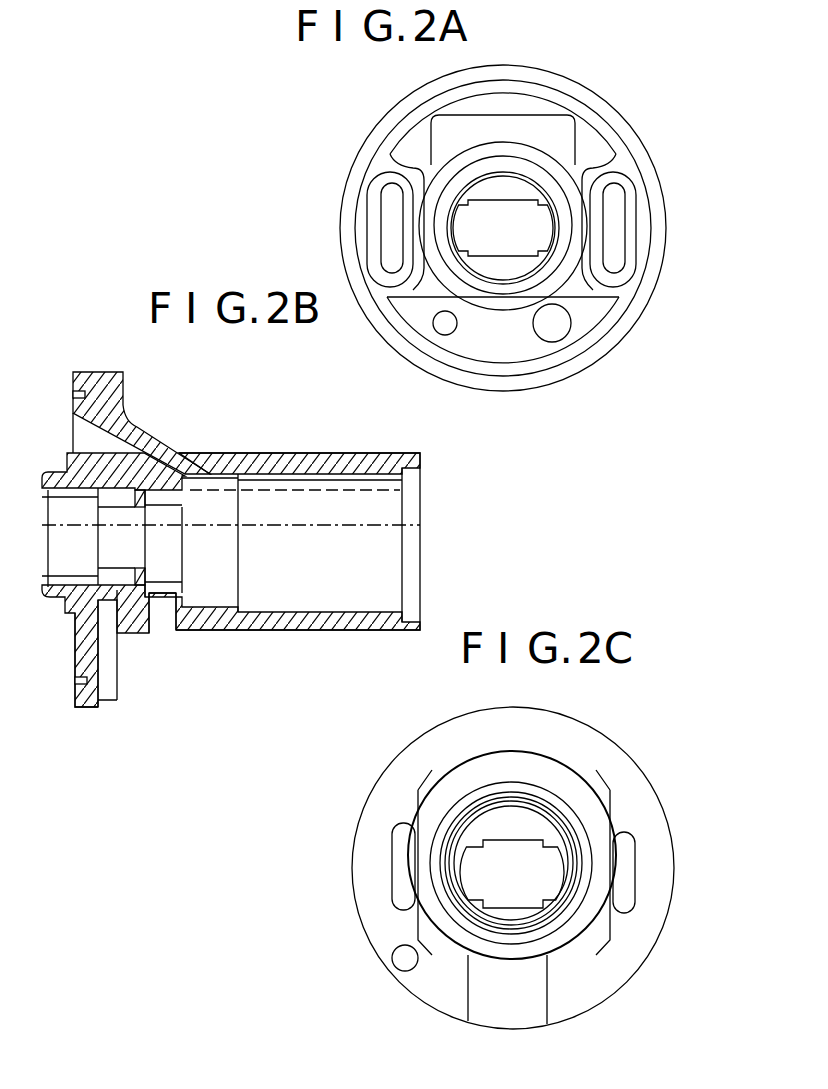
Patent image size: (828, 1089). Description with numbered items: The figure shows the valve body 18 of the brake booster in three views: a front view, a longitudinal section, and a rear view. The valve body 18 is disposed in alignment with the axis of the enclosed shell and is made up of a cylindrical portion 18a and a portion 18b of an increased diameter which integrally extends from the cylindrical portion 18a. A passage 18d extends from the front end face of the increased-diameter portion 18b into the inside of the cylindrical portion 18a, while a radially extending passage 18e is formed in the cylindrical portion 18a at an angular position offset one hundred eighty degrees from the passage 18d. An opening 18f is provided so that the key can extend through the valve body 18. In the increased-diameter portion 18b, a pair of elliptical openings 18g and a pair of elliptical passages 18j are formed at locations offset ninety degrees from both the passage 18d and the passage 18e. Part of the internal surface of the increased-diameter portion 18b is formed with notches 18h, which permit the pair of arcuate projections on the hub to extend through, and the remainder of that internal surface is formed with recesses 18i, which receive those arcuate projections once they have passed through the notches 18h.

In FIG. 2A, the valve body 18 is at (622, 103).
In FIG. 2B, the valve body 18 is at (282, 640).
In FIG. 2B, the cylindrical portion 18a is at (265, 452).
In FIG. 2C, the cylindrical portion 18a is at (610, 820).
In FIG. 2A, the portion of an increased diameter 18b is at (643, 145).
In FIG. 2B, the portion of an increased diameter 18b is at (99, 372).
In FIG. 2C, the portion of an increased diameter 18b is at (652, 776).
In FIG. 2A, the passage 18d is at (534, 114).
In FIG. 2B, the passage 18d is at (135, 440).
In FIG. 2C, the passage 18d is at (548, 818).
In FIG. 2B, the radially extending passage 18e is at (168, 628).
In FIG. 2B, the opening 18f is at (110, 628).
In FIG. 2C, the opening 18f is at (547, 1000).
In FIG. 2A, the elliptical openings 18g is at (370, 238).
In FIG. 2A, the notches 18h is at (548, 228).
In FIG. 2C, the notches 18h is at (560, 873).
In FIG. 2B, the recesses 18i is at (158, 492).
In FIG. 2C, the recesses 18i is at (516, 828).
In FIG. 2A, the elliptical passages 18j is at (388, 200).
In FIG. 2C, the elliptical passages 18j is at (395, 862).